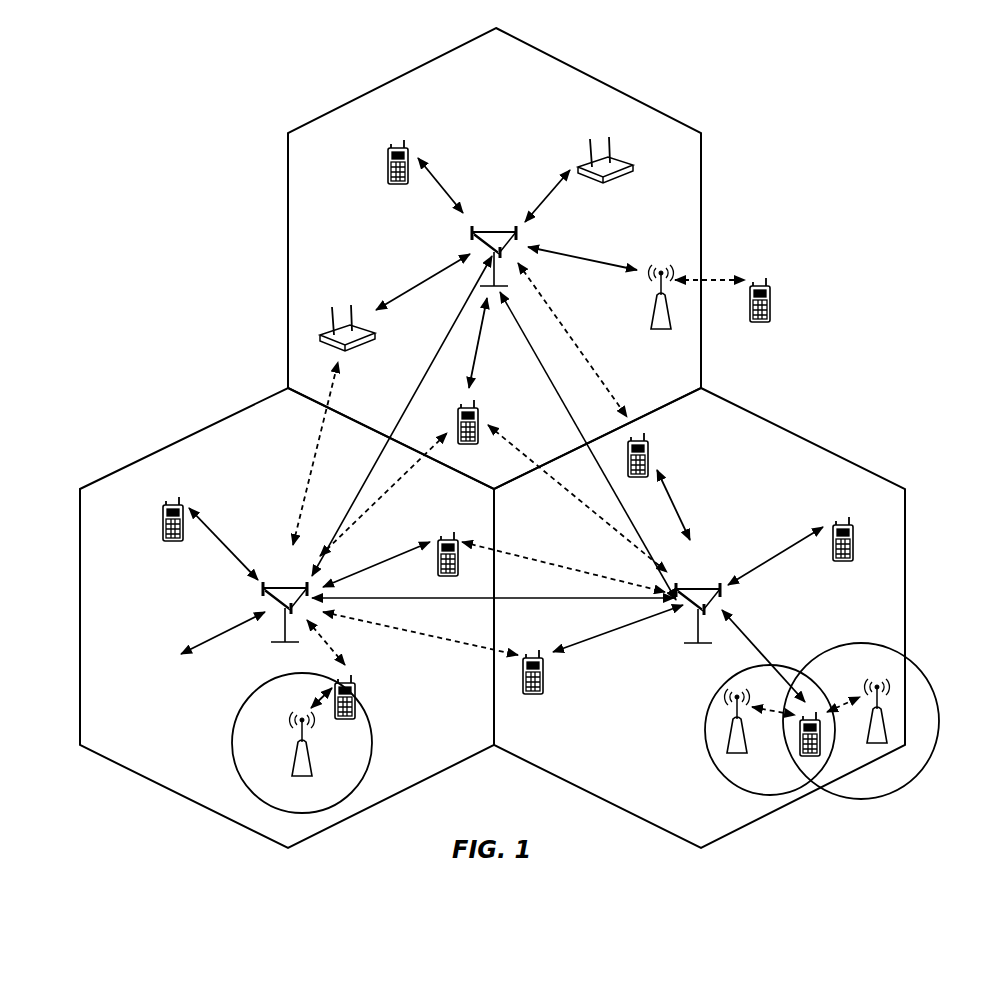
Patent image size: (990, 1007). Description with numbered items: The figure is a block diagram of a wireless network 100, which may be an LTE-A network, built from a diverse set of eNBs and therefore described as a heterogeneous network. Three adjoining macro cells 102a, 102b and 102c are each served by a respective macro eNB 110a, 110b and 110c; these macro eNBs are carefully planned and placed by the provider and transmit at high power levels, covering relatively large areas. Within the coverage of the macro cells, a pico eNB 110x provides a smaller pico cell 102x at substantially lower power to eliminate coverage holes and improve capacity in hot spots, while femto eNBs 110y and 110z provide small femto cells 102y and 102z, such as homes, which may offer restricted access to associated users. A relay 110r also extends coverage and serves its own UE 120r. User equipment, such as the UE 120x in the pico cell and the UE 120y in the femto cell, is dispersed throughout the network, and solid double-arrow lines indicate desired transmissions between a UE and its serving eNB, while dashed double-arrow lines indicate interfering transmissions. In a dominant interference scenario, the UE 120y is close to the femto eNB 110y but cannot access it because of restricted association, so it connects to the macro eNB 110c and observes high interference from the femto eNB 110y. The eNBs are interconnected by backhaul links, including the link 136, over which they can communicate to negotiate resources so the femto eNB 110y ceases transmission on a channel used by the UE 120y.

The wireless network 100 is at (838, 97).
The macro cell 102a is at (598, 80).
The macro cell 102b is at (183, 438).
The macro cell 102c is at (802, 438).
The pico cell 102x is at (254, 694).
The femto cell 102y is at (709, 708).
The femto cell 102z is at (870, 629).
The macro eNB 110a is at (493, 230).
The macro eNB 110b is at (285, 586).
The macro eNB 110c is at (698, 587).
The relay 110r is at (650, 313).
The pico eNB 110x is at (310, 770).
The femto eNB 110y is at (745, 748).
The femto eNB 110z is at (885, 735).
The UE 120r is at (770, 318).
The UE 120x is at (356, 697).
The UE 120y is at (800, 750).
The backhaul link between base stations 136 is at (568, 418).